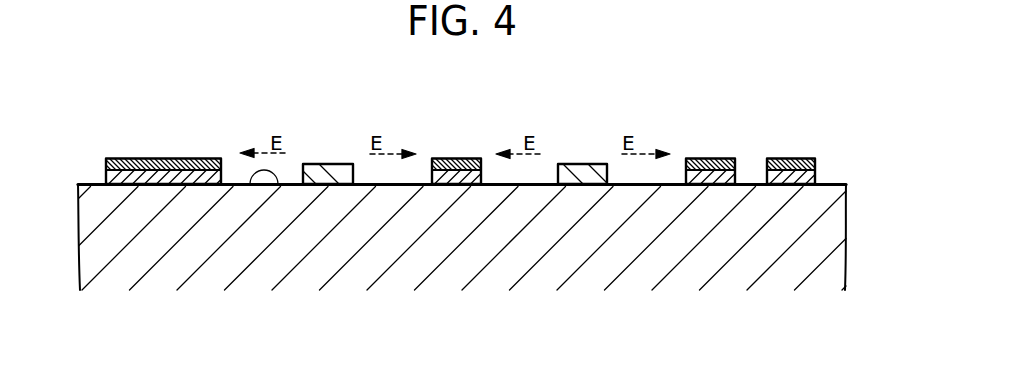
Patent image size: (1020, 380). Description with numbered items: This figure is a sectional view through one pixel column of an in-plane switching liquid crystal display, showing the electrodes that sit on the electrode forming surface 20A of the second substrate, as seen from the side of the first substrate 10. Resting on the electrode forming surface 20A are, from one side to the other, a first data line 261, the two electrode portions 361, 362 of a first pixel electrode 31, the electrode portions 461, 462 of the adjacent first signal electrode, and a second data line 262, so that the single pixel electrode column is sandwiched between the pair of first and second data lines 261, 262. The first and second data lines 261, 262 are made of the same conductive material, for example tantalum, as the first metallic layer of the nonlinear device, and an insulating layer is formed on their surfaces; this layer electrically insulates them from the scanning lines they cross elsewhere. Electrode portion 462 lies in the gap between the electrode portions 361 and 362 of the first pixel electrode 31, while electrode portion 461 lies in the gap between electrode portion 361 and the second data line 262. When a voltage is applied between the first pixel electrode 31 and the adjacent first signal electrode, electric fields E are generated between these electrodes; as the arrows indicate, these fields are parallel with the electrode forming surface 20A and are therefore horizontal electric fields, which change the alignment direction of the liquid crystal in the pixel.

The first substrate 10 is at (830, 235).
The electrode forming surface 20A is at (254, 186).
The first pixel electrode 31 is at (446, 137).
The electrode portion 361 is at (585, 164).
The electrode portion 362 is at (330, 164).
The first data line 261 is at (134, 146).
The second data line 262 is at (823, 137).
The electrode portion 461 is at (737, 173).
The electrode portion 462 is at (462, 158).